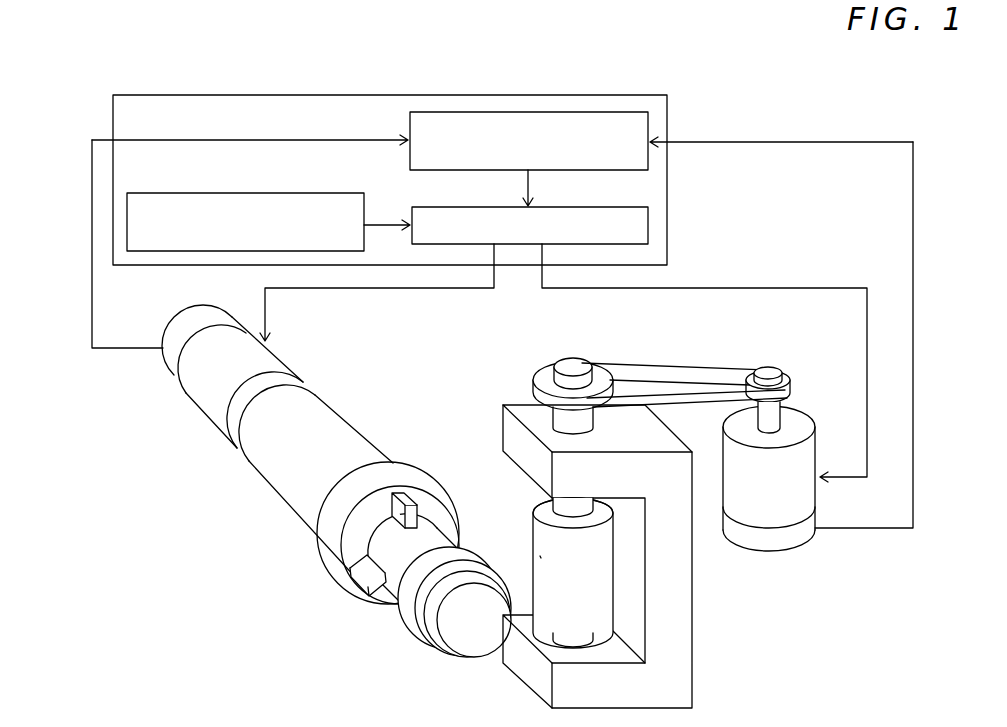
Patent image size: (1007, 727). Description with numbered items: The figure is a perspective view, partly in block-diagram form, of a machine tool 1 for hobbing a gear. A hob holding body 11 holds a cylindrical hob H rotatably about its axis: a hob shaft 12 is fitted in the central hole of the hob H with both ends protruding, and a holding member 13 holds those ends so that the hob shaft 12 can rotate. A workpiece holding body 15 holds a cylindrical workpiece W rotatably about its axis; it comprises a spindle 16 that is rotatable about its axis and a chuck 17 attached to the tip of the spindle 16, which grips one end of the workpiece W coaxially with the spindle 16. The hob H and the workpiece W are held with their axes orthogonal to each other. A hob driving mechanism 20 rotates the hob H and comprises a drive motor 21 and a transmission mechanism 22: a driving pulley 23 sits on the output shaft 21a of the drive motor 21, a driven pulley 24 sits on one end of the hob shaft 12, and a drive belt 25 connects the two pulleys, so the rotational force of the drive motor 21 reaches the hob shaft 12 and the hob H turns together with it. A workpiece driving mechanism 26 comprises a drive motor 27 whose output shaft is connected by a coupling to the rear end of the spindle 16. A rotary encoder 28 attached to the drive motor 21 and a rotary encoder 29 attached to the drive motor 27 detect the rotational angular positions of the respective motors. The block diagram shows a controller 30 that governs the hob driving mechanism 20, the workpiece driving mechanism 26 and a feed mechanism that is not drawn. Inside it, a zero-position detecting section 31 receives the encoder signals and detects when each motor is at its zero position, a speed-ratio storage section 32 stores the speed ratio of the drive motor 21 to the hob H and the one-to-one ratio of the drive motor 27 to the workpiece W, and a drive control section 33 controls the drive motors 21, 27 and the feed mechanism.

The machine tool 1 is at (56, 111).
The hob holding body 11 is at (721, 627).
The hob shaft 12 is at (538, 503).
The holding member 13 is at (685, 653).
The workpiece holding body 15 is at (278, 540).
The spindle 16 is at (280, 490).
The chuck 17 is at (335, 552).
The hob driving mechanism 20 is at (842, 454).
The drive motor 21 is at (807, 490).
The output shaft 21a is at (768, 372).
The transmission mechanism 22 is at (680, 333).
The driving pulley 23 is at (750, 372).
The driven pulley 24 is at (540, 370).
The drive belt 25 is at (652, 372).
The workpiece driving mechanism 26 is at (263, 357).
The drive motor 27 is at (295, 382).
The rotary encoder 28 is at (778, 548).
The rotary encoder 29 is at (167, 367).
The controller 30 is at (668, 112).
The zero-position detecting section 31 is at (517, 112).
The speed-ratio storage section 32 is at (282, 193).
The drive control section 33 is at (649, 220).
The hob H is at (540, 557).
The workpiece W is at (463, 650).